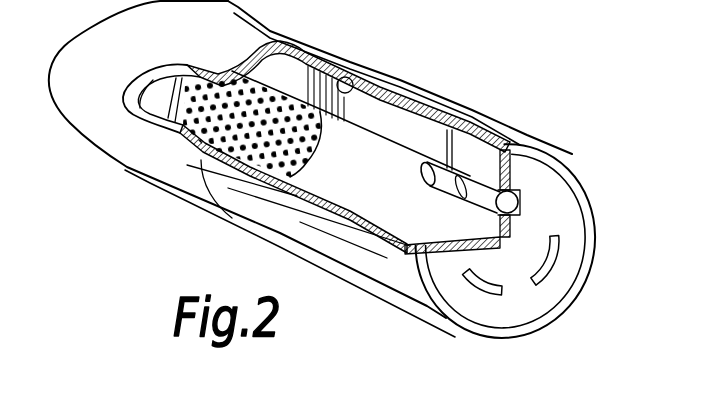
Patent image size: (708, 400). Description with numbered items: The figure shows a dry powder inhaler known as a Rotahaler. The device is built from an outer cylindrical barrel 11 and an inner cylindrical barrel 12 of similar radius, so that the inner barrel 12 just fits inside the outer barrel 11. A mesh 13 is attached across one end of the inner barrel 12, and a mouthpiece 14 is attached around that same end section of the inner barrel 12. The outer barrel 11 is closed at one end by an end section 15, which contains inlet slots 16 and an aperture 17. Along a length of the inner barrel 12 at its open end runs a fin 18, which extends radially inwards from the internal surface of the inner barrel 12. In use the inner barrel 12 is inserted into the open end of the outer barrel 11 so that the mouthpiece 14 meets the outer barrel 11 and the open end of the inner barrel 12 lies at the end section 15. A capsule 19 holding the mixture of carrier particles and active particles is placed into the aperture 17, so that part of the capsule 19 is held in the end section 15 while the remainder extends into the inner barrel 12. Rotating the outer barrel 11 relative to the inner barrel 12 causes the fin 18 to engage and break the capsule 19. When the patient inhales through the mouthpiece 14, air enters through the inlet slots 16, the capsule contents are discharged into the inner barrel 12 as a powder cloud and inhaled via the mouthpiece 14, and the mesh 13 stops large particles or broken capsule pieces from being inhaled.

The outer cylindrical barrel 11 is at (485, 127).
The inner cylindrical barrel 12 is at (343, 80).
The mesh 13 is at (262, 150).
The mouthpiece 14 is at (137, 133).
The end section 15 is at (552, 177).
The inlet slots 16 is at (553, 269).
The aperture 17 is at (522, 193).
The fin 18 is at (403, 130).
The capsule 19 is at (443, 185).